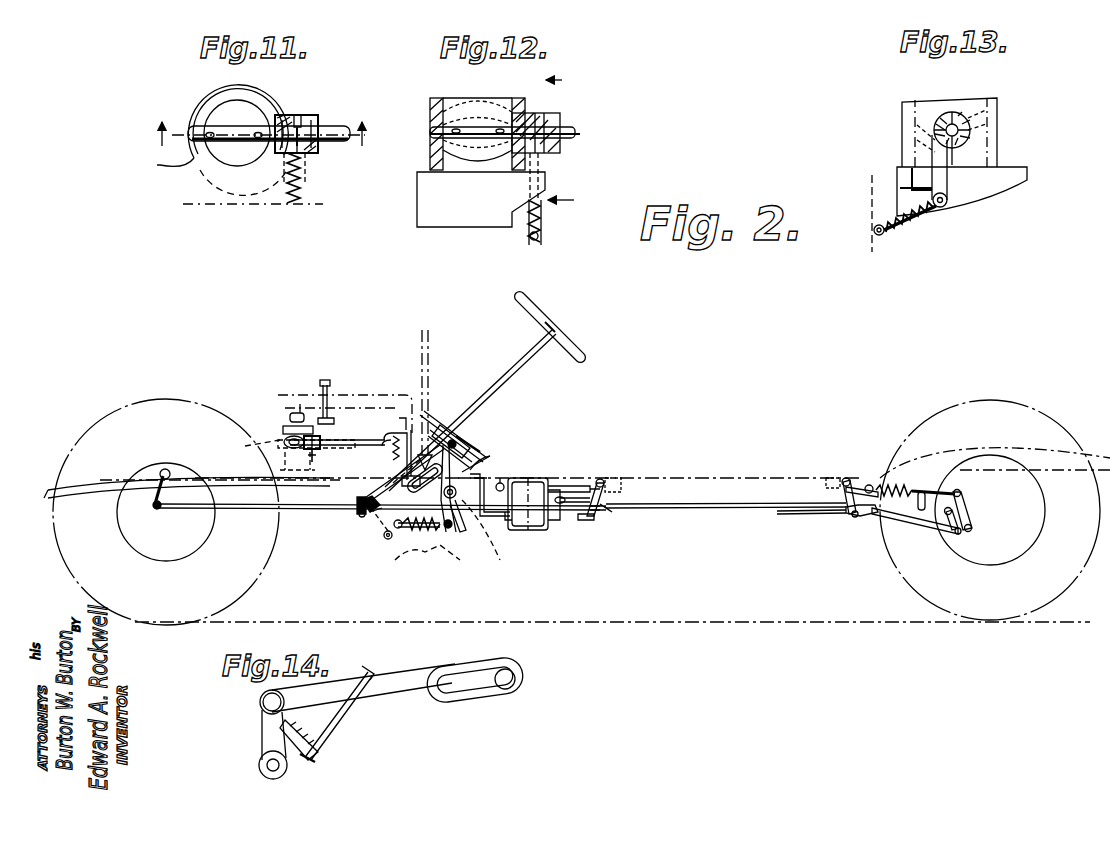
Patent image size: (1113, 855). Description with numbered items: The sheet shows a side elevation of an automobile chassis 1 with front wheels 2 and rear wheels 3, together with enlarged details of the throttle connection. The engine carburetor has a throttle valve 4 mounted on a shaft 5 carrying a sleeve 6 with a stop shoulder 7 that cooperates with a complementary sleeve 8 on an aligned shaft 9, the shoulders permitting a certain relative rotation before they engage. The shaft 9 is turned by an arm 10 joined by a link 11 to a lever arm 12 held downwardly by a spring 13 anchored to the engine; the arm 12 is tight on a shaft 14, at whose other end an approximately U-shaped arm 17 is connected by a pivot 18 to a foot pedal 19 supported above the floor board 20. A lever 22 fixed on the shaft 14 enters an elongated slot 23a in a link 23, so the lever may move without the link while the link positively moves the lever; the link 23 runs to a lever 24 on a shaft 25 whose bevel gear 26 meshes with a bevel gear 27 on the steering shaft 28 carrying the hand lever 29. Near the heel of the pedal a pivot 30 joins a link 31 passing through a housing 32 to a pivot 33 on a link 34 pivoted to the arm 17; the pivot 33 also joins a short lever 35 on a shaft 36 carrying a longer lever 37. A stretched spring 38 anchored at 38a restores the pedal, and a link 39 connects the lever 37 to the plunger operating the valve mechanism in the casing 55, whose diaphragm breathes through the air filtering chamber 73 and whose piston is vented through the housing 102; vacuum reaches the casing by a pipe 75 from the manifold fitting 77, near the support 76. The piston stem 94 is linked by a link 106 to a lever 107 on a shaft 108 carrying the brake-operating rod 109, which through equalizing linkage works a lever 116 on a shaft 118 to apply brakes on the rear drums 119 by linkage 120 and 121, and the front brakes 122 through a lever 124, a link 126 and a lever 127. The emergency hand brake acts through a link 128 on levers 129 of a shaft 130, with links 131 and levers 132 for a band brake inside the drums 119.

In FIG. 2, the chassis 1 is at (760, 478).
In FIG. 2, the front wheels 2 is at (210, 412).
In FIG. 2, the rear wheels 3 is at (1002, 405).
In FIG. 11, the throttle valve 4 is at (212, 120).
In FIG. 12, the throttle valve 4 is at (440, 118).
In FIG. 13, the throttle valve 4 is at (972, 118).
In FIG. 2, the throttle valve 4 is at (292, 440).
In FIG. 11, the shaft 5 is at (228, 150).
In FIG. 12, the shaft 5 is at (436, 145).
In FIG. 2, the shaft 5 is at (312, 435).
In FIG. 11, the sleeve 6 is at (292, 118).
In FIG. 12, the sleeve 6 is at (527, 112).
In FIG. 13, the sleeve 6 is at (934, 128).
In FIG. 2, the sleeve 6 is at (322, 436).
In FIG. 11, the stop shoulder 7 is at (289, 156).
In FIG. 11, the complementary sleeve 8 is at (312, 153).
In FIG. 12, the complementary sleeve 8 is at (562, 152).
In FIG. 13, the complementary sleeve 8 is at (960, 140).
In FIG. 2, the complementary sleeve 8 is at (316, 450).
In FIG. 11, the shaft 9 is at (336, 128).
In FIG. 12, the shaft 9 is at (570, 128).
In FIG. 13, the shaft 9 is at (940, 124).
In FIG. 2, the shaft 9 is at (338, 438).
In FIG. 2, the arm 10 is at (396, 436).
In FIG. 2, the link 11 is at (409, 432).
In FIG. 11, the lever arm 12 is at (264, 136).
In FIG. 2, the lever arm 12 is at (428, 440).
In FIG. 12, the spring 13 is at (509, 158).
In FIG. 2, the spring 13 is at (392, 448).
In FIG. 2, the shaft 14 is at (405, 430).
In FIG. 2, the arm 17 is at (442, 448).
In FIG. 2, the pivot 18 is at (455, 436).
In FIG. 2, the foot pedal 19 is at (465, 446).
In FIG. 2, the floor board 20 is at (472, 452).
In FIG. 2, the lever 22 is at (412, 532).
In FIG. 14, the link 23 is at (373, 700).
In FIG. 2, the elongated slot 23a is at (376, 530).
In FIG. 14, the elongated slot 23a is at (488, 698).
In FIG. 2, the lever 24 is at (356, 506).
In FIG. 14, the lever 24 is at (260, 730).
In FIG. 2, the shaft 25 is at (358, 514).
In FIG. 14, the shaft 25 is at (266, 768).
In FIG. 2, the bevel gear 26 is at (364, 500).
In FIG. 14, the bevel gear 26 is at (316, 762).
In FIG. 2, the bevel gear 27 is at (375, 514).
In FIG. 14, the bevel gear 27 is at (318, 746).
In FIG. 2, the shaft 28 is at (515, 368).
In FIG. 14, the shaft 28 is at (350, 684).
In FIG. 2, the hand lever 29 is at (560, 326).
In FIG. 2, the pivot 30 is at (488, 462).
In FIG. 2, the link 31 is at (484, 480).
In FIG. 2, the housing 32 is at (490, 474).
In FIG. 2, the pivot 33 is at (456, 500).
In FIG. 2, the link 34 is at (492, 456).
In FIG. 2, the short lever 35 is at (462, 515).
In FIG. 2, the shaft 36 is at (444, 540).
In FIG. 2, the longer lever 37 is at (462, 535).
In FIG. 2, the stretched spring 38 is at (405, 530).
In FIG. 2, the spring attachment 38a is at (410, 560).
In FIG. 2, the link 39 is at (510, 528).
In FIG. 2, the casing 55 is at (545, 525).
In FIG. 2, the air filtering chamber 73 is at (518, 476).
In FIG. 2, the pipe 75 is at (326, 395).
In FIG. 2, the support 76 is at (250, 450).
In FIG. 2, the fitting 77 is at (290, 415).
In FIG. 2, the piston stem 94 is at (572, 482).
In FIG. 2, the housing 102 is at (602, 478).
In FIG. 2, the link 106 is at (598, 480).
In FIG. 2, the lever 107 is at (612, 496).
In FIG. 2, the shaft 108 is at (616, 490).
In FIG. 2, the brake-operating rod 109 is at (692, 502).
In FIG. 2, the lever 116 is at (866, 486).
In FIG. 2, the shaft 118 is at (848, 478).
In FIG. 2, the drums 119 is at (1012, 562).
In FIG. 2, the linkage 120 is at (870, 520).
In FIG. 2, the linkage 121 is at (972, 512).
In FIG. 2, the front brakes 122 is at (160, 562).
In FIG. 2, the lever 124 is at (600, 516).
In FIG. 2, the link 126 is at (252, 512).
In FIG. 2, the lever 127 is at (154, 487).
In FIG. 2, the link 128 is at (790, 514).
In FIG. 2, the levers 129 is at (872, 486).
In FIG. 2, the shaft 130 is at (898, 488).
In FIG. 2, the links 131 is at (905, 520).
In FIG. 2, the levers 132 is at (950, 532).